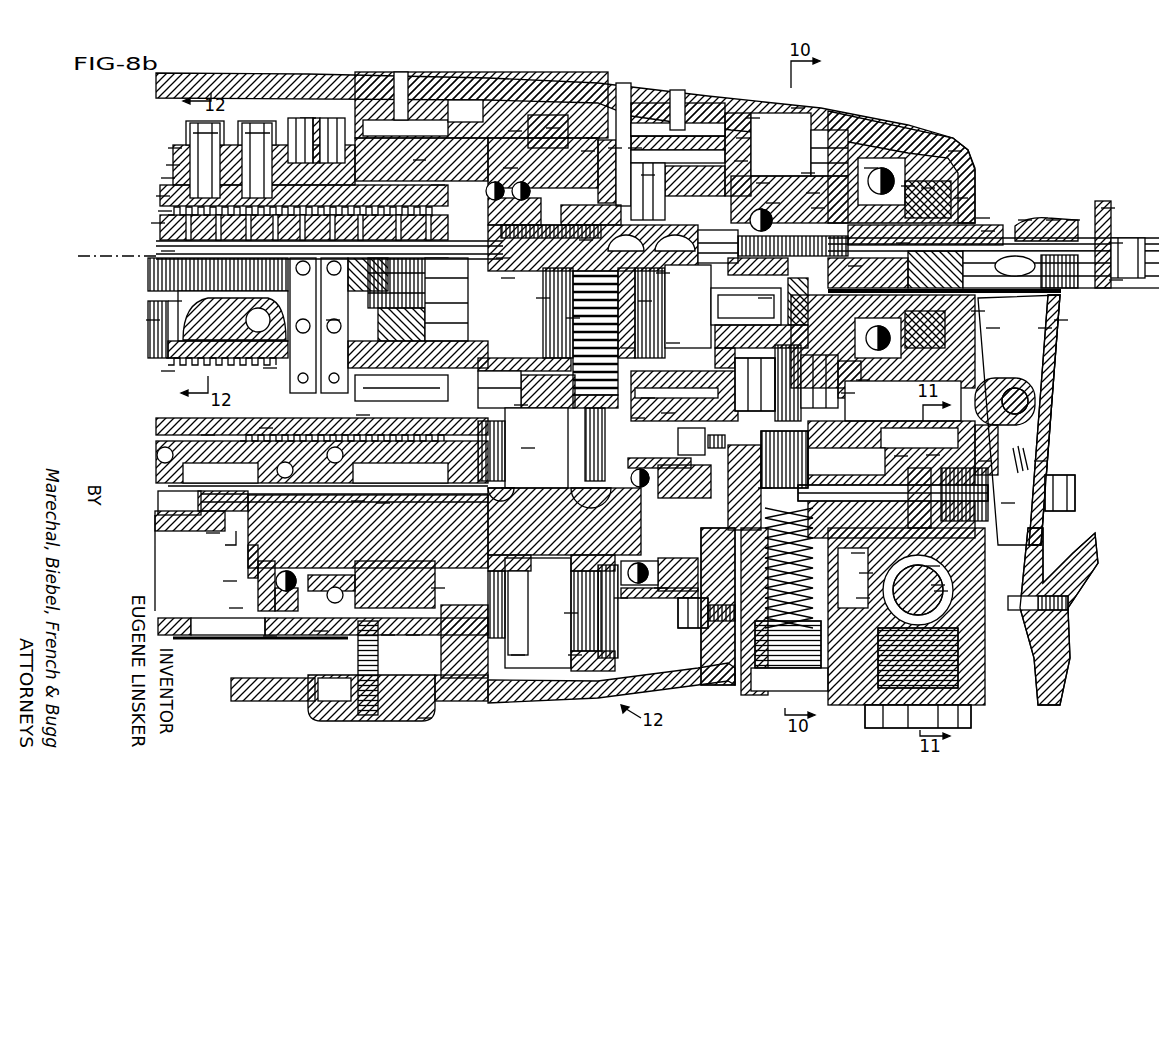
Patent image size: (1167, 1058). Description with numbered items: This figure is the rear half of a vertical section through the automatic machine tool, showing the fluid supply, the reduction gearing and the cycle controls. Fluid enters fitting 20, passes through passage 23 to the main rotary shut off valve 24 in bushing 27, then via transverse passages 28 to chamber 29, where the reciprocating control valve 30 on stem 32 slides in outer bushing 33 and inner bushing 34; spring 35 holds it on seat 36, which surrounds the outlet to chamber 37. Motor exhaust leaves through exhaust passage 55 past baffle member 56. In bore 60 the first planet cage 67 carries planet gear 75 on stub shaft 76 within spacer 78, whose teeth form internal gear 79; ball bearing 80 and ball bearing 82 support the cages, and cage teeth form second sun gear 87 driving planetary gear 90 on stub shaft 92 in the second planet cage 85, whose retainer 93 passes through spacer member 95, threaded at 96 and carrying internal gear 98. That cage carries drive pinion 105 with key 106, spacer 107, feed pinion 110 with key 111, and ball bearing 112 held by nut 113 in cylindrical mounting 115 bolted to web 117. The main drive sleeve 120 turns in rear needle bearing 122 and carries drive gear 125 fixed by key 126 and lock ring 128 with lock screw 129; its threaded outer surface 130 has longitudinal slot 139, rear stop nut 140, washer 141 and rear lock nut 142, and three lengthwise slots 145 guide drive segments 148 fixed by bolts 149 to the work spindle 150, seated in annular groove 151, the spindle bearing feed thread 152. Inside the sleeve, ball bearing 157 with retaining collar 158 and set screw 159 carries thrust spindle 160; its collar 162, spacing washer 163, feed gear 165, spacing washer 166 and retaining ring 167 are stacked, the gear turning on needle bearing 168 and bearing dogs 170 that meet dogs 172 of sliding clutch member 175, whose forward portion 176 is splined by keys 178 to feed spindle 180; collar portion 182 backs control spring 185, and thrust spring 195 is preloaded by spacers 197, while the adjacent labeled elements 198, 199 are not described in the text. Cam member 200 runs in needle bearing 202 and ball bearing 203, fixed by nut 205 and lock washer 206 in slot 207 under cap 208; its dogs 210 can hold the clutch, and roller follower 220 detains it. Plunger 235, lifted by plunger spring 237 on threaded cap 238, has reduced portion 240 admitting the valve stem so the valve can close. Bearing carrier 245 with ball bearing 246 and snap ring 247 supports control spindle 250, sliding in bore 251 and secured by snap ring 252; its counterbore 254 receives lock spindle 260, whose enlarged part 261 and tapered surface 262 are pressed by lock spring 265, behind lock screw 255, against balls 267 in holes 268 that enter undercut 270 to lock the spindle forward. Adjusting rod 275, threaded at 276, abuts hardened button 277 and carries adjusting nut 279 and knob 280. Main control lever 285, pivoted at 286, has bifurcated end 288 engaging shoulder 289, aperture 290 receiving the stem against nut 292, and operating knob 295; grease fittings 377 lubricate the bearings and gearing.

The fitting 20 is at (960, 707).
The passage 23 is at (935, 620).
The main rotary shut off valve 24 is at (930, 577).
The bushing 27 is at (933, 583).
The transverse passages 28 is at (910, 563).
The chamber 29 is at (910, 467).
The reciprocating control valve 30 is at (925, 447).
The stem 32 is at (1000, 495).
The outer bushing 33 is at (977, 453).
The inner bushing 34 is at (850, 545).
The spring 35 is at (925, 558).
The seat 36 is at (893, 448).
The chamber 37 is at (858, 565).
The exhaust passage 55 is at (250, 667).
The baffle member 56 is at (417, 710).
The bore 60 is at (258, 420).
The first planet cage 67 is at (222, 573).
The planet gear 75 is at (200, 427).
The stub shaft 76 is at (205, 525).
The spacer 78 is at (262, 628).
The internal gear 79 is at (228, 600).
The ball bearing 80 is at (272, 630).
The ball bearing 82 is at (313, 623).
The second revolving planet cage 85 is at (548, 570).
The second sun gear 87 is at (375, 495).
The planetary gear 90 is at (355, 407).
The stub shaft 92 is at (350, 493).
The retainer 93 is at (430, 580).
The spacer member 95 is at (380, 627).
The screw thread 96 is at (405, 627).
The internal gear 98 is at (345, 663).
The drive pinion 105 is at (510, 647).
The key 106 is at (500, 480).
The spacer 107 is at (563, 605).
The feed pinion 110 is at (567, 647).
The key 111 is at (520, 440).
The ball bearing 112 is at (613, 590).
The nut 113 is at (653, 580).
The cylindrical mounting 115 is at (670, 620).
The web 117 is at (700, 645).
The main drive sleeve 120 is at (165, 350).
The rear needle bearing 122 is at (370, 117).
The drive gear 125 is at (500, 160).
The key 126 is at (513, 397).
The lock ring 128 is at (545, 120).
The lock screw 129 is at (507, 123).
The threaded outer surface 130 is at (262, 360).
The longitudinal slot 139 is at (160, 363).
The rear stop nut 140 is at (285, 115).
The washer 141 is at (300, 110).
The rear lock nut 142 is at (325, 115).
The lengthwise slots 145 is at (165, 157).
The drive segment 148 is at (167, 140).
The bolts 149 is at (246, 112).
The work spindle 150 is at (160, 170).
The annular groove 151 is at (155, 188).
The feed thread 152 is at (157, 203).
The ball bearing 157 is at (480, 107).
The retaining collar 158 is at (580, 143).
The locking set screw 159 is at (607, 140).
The thrust spindle 160 is at (455, 232).
The peripheral collar 162 is at (535, 290).
The spacing washer 163 is at (565, 310).
The feed gear 165 is at (585, 130).
The spacing washer 166 is at (627, 140).
The retaining ring 167 is at (620, 340).
The needle bearing 168 is at (578, 232).
The dogs 170 is at (640, 167).
The dogs 172 is at (735, 130).
The sliding clutch member 175 is at (660, 405).
The cylindrical forward portion 176 is at (655, 265).
The keys 178 is at (637, 293).
The feed spindle 180 is at (160, 243).
The collar portion 182 is at (495, 250).
The control spring 185 is at (500, 270).
The thrust spring 195 is at (150, 215).
The spacers 197 is at (325, 312).
The housing 198 is at (410, 152).
The bearing 199 is at (430, 177).
The cam member 200 is at (765, 195).
The needle bearing 202 is at (630, 410).
The ball bearing 203 is at (863, 160).
The nut 205 is at (920, 180).
The tongued lock washer 206 is at (900, 178).
The slot 207 is at (953, 190).
The cap 208 is at (947, 143).
The dogs 210 is at (745, 110).
The roller follower 220 is at (800, 390).
The plunger 235 is at (760, 435).
The plunger spring 237 is at (855, 590).
The threaded cap 238 is at (760, 680).
The reduced diameter portion 240 is at (757, 480).
The bearing carrier 245 is at (733, 153).
The ball bearing 246 is at (755, 175).
The snap ring 247 is at (790, 100).
The control spindle 250 is at (1037, 320).
The bore 251 is at (985, 320).
The snap ring 252 is at (757, 290).
The counterbore 254 is at (980, 223).
The lock screw 255 is at (1065, 212).
The lock spindle 260 is at (1017, 212).
The enlarged part 261 is at (975, 210).
The tapered surface 262 is at (845, 258).
The lock spring 265 is at (970, 303).
The balls 267 is at (810, 200).
The radially extending holes 268 is at (855, 372).
The undercut 270 is at (805, 185).
The adjusting rod 275 is at (1108, 235).
The threads 276 is at (800, 165).
The hardened button 277 is at (665, 335).
The adjusting nut 279 is at (1108, 272).
The knob 280 is at (1100, 200).
The main control lever 285 is at (1036, 367).
The pivotal mounting 286 is at (1020, 395).
The bifurcated end 288 is at (1045, 212).
The shoulder 289 is at (1053, 312).
The aperture 290 is at (1033, 453).
The nut 292 is at (1055, 475).
The operating knob 295 is at (1080, 520).
The grease fittings 377 is at (392, 78).